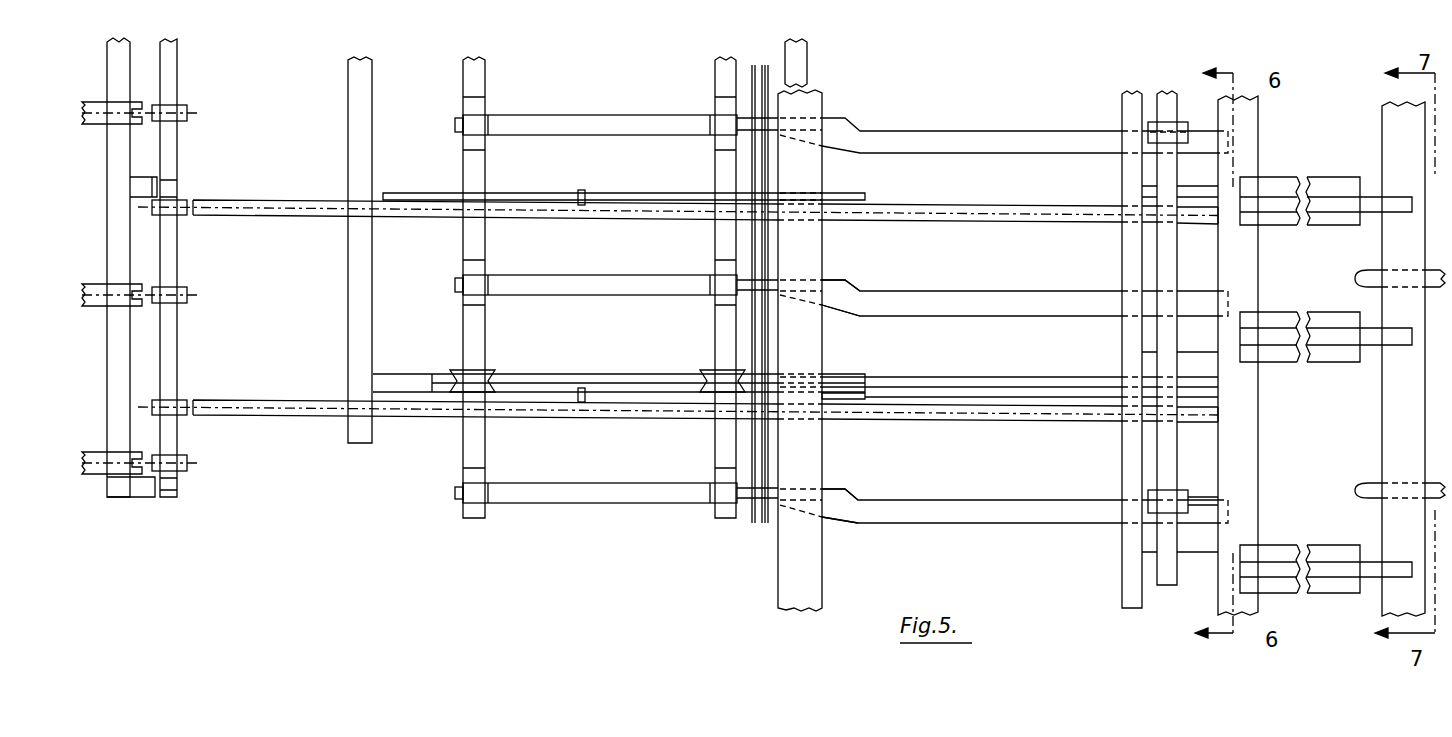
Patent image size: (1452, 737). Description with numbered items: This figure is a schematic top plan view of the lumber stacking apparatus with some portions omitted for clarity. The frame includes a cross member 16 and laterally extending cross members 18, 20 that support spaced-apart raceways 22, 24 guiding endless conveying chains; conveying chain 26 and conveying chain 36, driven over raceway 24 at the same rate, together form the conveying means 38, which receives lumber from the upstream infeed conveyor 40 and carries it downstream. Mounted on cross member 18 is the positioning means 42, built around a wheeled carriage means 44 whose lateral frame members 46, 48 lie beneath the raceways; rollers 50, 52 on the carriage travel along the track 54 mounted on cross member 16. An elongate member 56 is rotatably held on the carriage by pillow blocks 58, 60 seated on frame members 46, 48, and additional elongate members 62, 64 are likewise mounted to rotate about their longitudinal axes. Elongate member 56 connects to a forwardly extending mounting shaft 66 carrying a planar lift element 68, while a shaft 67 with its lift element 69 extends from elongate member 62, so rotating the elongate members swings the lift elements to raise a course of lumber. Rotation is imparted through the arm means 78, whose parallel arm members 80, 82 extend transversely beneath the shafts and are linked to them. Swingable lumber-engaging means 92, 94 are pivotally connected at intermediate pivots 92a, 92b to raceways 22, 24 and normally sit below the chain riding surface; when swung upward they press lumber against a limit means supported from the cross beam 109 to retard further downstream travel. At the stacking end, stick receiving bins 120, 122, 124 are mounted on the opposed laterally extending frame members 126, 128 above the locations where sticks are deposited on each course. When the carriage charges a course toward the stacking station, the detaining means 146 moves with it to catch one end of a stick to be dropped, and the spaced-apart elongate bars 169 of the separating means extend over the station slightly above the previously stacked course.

The cross member 16 is at (405, 372).
The laterally extending cross member 18 is at (358, 130).
The laterally extending cross member 20 is at (800, 66).
The raceway 22 is at (678, 418).
The raceway 24 is at (678, 211).
The endless conveying chain 26 is at (304, 423).
The conveying chain 36 is at (309, 214).
The conveying means 38 is at (222, 224).
The infeed conveyor 40 is at (122, 90).
The positioning means 42 is at (595, 340).
The carriage means 44 is at (595, 351).
The frame member 46 is at (462, 446).
The frame member 48 is at (714, 441).
The roller 50 is at (490, 371).
The roller 52 is at (706, 371).
The track 54 is at (947, 376).
The elongate member 56 is at (596, 484).
The pillow block 58 is at (458, 505).
The pillow block 60 is at (712, 502).
The elongate member 62 is at (594, 275).
The elongate member 64 is at (596, 114).
The mounting shaft 66 is at (838, 490).
The shaft 67 is at (840, 281).
The lift element 68 is at (1025, 490).
The lift element 69 is at (1025, 283).
The arm means 78 is at (788, 314).
The arm member 80 is at (768, 524).
The arm member 82 is at (751, 528).
The lumber-engaging means 92 is at (541, 381).
The pivot connection 92a is at (583, 387).
The pivot connection 92b is at (583, 191).
The lumber-engaging means 94 is at (530, 192).
The cross beam 109 is at (822, 103).
The stick receiving bin 120 is at (1280, 560).
The bin 122 is at (1280, 330).
The bin 124 is at (1282, 195).
The frame member 126 is at (1258, 125).
The frame member 128 is at (1390, 133).
The detaining means 146 is at (1150, 482).
The elongate bar 169 is at (1370, 275).